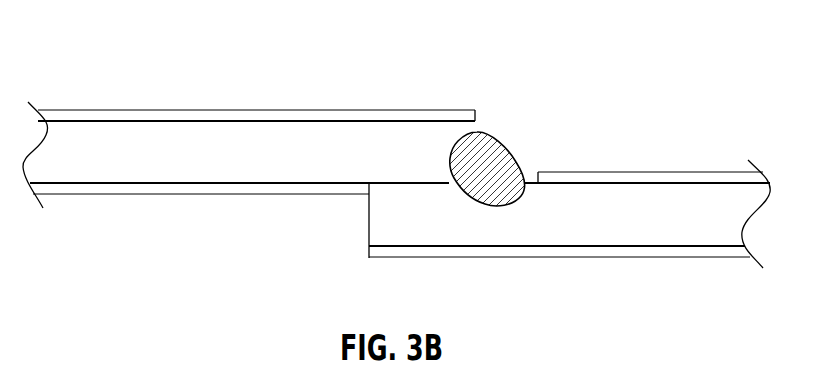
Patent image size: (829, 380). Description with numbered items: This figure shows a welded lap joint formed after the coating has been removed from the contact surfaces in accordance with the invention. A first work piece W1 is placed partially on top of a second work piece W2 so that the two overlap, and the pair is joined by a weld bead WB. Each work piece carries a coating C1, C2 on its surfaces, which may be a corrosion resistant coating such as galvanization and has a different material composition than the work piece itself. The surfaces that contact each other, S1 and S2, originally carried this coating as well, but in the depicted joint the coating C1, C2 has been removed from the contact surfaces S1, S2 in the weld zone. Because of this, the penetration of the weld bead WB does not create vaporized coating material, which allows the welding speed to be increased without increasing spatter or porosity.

The first work piece W1 is at (205, 140).
The coating C1 is at (325, 110).
The contact surface S1 is at (383, 181).
The second work piece W2 is at (678, 220).
The coating C2 is at (640, 172).
The contact surface S2 is at (418, 183).
The weld bead WB is at (492, 138).